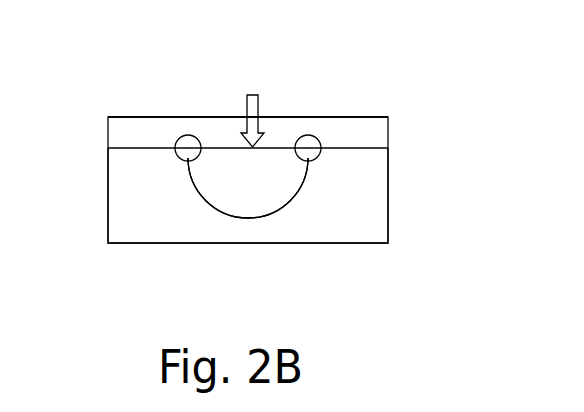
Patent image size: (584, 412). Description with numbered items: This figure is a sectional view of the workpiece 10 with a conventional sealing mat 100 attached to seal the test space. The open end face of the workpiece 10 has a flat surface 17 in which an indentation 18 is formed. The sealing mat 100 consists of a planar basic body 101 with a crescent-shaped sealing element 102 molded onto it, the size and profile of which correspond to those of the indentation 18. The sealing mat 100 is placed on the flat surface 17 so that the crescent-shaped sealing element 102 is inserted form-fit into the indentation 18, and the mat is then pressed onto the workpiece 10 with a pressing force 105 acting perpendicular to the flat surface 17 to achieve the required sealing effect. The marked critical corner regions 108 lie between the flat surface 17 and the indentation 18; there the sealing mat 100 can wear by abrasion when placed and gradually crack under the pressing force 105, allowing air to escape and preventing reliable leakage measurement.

The sealing mat 100 is at (108, 137).
The workpiece 10 is at (388, 208).
The flat surface 17 is at (367, 148).
The basic body 101 is at (362, 138).
The crescent-shaped sealing element 102 is at (278, 167).
The pressing force 105 is at (251, 95).
The critical corner regions 108 is at (189, 147).
The indentation 18 is at (272, 205).